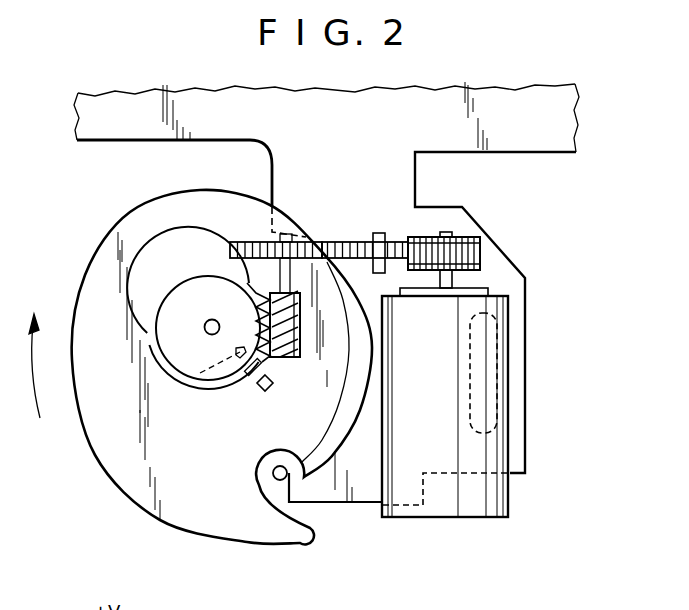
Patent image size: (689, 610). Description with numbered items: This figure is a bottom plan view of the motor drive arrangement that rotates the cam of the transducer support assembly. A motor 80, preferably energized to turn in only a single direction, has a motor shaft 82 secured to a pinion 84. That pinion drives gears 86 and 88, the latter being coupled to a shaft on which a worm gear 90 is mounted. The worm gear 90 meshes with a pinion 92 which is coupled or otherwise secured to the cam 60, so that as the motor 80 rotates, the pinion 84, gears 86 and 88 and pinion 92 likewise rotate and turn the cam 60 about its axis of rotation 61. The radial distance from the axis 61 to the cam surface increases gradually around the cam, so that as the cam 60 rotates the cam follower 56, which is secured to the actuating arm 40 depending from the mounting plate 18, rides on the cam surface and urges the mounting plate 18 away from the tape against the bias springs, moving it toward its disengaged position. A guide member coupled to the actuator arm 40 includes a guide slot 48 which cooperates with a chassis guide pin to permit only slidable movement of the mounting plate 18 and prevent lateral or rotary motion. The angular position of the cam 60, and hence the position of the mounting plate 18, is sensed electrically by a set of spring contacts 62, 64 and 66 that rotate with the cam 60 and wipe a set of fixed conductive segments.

The mounting plate 18 is at (137, 123).
The actuating arm 40 is at (367, 503).
The guide slot 48 is at (500, 393).
The cam follower 56 is at (275, 490).
The cam 60 is at (242, 543).
The axis of rotation 61 is at (204, 328).
The spring contact 62 is at (178, 383).
The spring contact 64 is at (253, 376).
The spring contact 66 is at (264, 392).
The motor 80 is at (433, 518).
The motor shaft 82 is at (446, 232).
The pinion 84 is at (482, 258).
The gear 86 is at (350, 242).
The gear 88 is at (246, 244).
The worm gear 90 is at (283, 358).
The pinion 92 is at (204, 278).